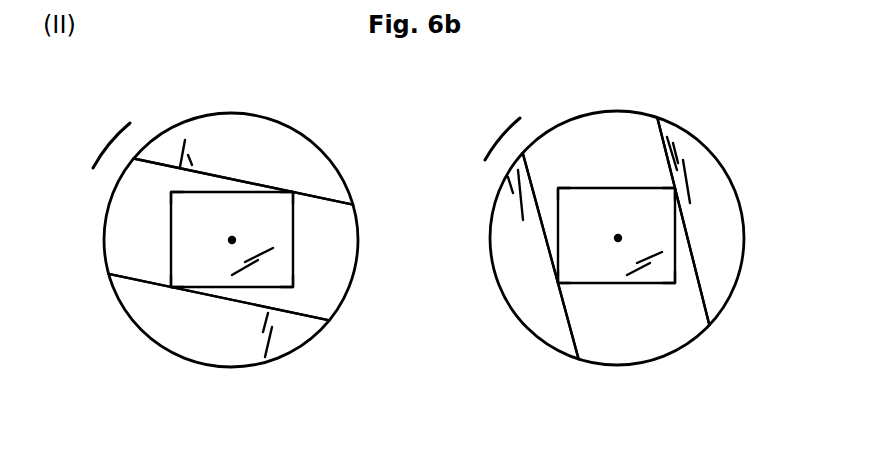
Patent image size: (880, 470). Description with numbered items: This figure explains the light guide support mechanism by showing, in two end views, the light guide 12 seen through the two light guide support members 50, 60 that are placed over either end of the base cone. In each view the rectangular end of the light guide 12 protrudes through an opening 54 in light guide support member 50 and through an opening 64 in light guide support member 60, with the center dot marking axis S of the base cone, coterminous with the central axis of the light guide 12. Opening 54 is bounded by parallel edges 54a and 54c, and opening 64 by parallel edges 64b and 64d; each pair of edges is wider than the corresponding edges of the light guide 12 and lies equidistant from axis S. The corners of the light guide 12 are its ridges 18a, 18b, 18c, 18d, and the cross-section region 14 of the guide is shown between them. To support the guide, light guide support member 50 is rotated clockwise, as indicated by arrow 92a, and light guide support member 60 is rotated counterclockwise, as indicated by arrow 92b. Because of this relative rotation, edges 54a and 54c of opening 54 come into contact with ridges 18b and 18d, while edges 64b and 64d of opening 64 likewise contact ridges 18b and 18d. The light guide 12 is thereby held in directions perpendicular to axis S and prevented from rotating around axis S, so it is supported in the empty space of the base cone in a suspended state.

The light guide 12 is at (293, 233).
The substrate / detection area 14 is at (182, 240).
The first corner edge of aperture 18a is at (169, 192).
The ridge 18b is at (293, 192).
The third corner edge of aperture 18c is at (293, 287).
The ridge 18d is at (171, 287).
The light guide support member 50 is at (307, 135).
The opening 54 is at (335, 272).
The edge 54a is at (240, 175).
The edge 54c is at (235, 303).
The light guide support member 60 is at (695, 135).
The opening 64 is at (645, 325).
The edge 64b is at (693, 258).
The edge 64d is at (538, 208).
The arrow 92a is at (103, 147).
The arrow 92b is at (503, 132).
The axis S is at (232, 240).